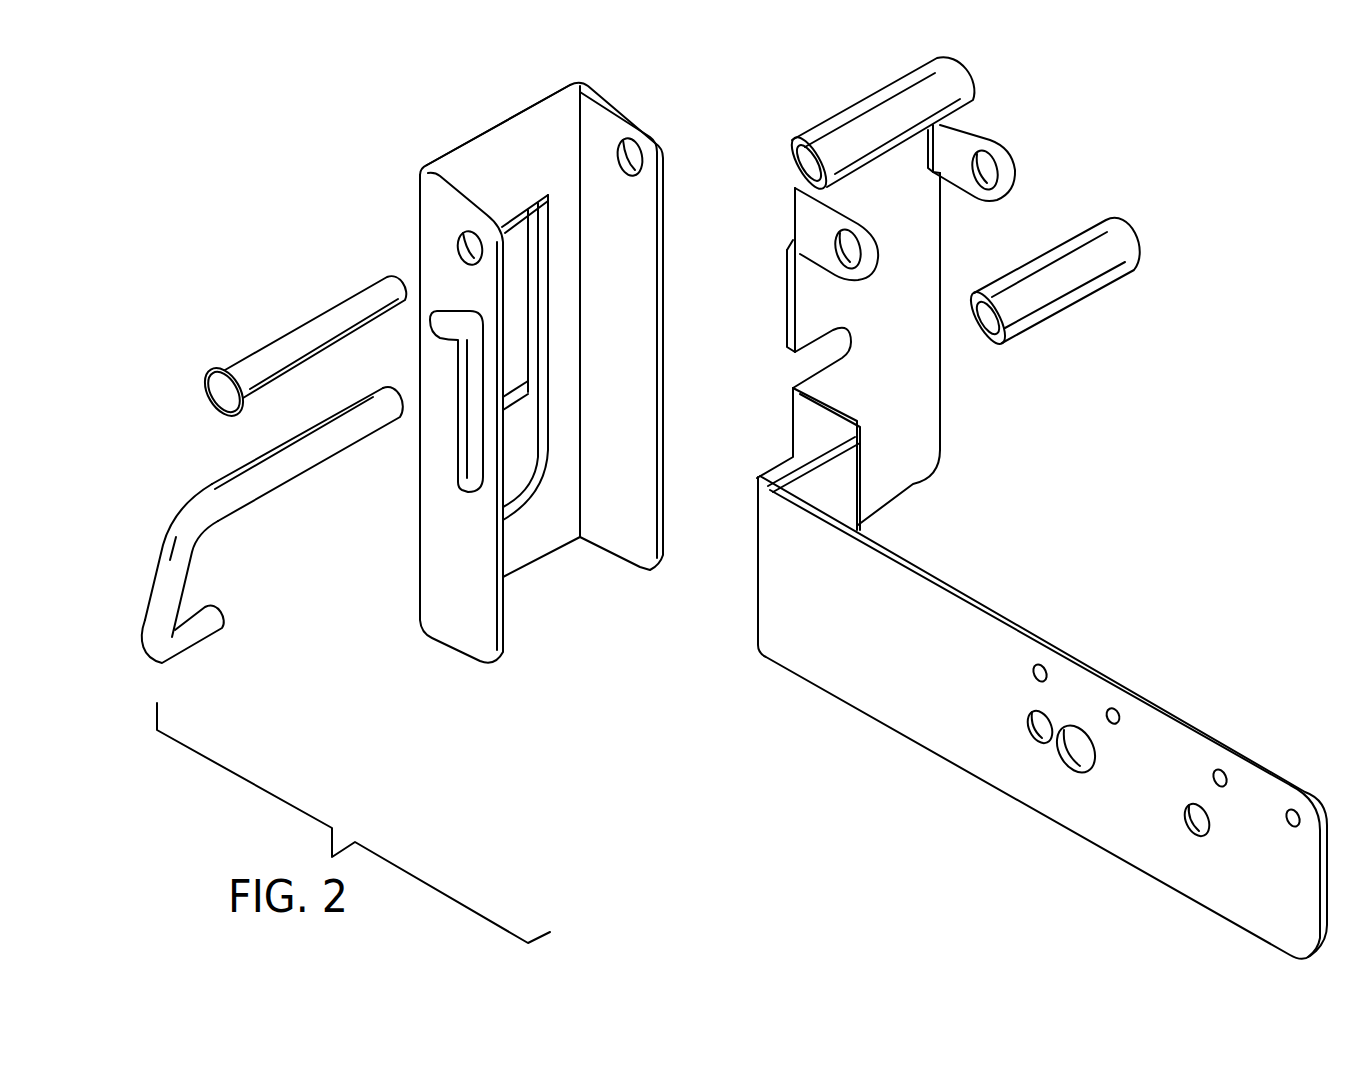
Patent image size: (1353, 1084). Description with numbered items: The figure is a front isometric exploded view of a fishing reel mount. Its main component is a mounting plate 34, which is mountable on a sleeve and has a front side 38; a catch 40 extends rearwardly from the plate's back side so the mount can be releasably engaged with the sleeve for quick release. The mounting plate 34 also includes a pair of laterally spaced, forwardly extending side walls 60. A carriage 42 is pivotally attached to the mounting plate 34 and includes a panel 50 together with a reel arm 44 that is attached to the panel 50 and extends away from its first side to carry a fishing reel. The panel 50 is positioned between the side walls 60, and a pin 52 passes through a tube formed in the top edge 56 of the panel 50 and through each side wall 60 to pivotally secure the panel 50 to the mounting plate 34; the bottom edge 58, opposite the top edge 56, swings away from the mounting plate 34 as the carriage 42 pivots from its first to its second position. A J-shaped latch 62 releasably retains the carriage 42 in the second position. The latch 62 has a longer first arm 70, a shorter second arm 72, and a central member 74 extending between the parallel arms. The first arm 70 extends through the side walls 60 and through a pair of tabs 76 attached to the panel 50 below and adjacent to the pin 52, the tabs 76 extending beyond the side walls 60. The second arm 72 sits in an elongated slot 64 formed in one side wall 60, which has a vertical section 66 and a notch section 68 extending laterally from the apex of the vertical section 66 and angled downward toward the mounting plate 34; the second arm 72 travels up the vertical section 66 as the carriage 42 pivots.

The mounting plate 34 is at (535, 388).
The front side 38 is at (515, 150).
The catch 40 is at (517, 348).
The carriage 42 is at (990, 511).
The reel arm 44 is at (948, 699).
The panel 50 is at (940, 452).
The pin 52 is at (308, 338).
The top edge 56 is at (873, 123).
The bottom edge 58 is at (886, 510).
The side walls 60 is at (630, 357).
The latch 62 is at (240, 547).
The elongated slot 64 is at (462, 358).
The vertical section 66 is at (462, 462).
The notch section 68 is at (415, 277).
The first arm 70 is at (277, 477).
The second arm 72 is at (205, 637).
The central member 74 is at (153, 597).
The tabs 76 is at (987, 130).